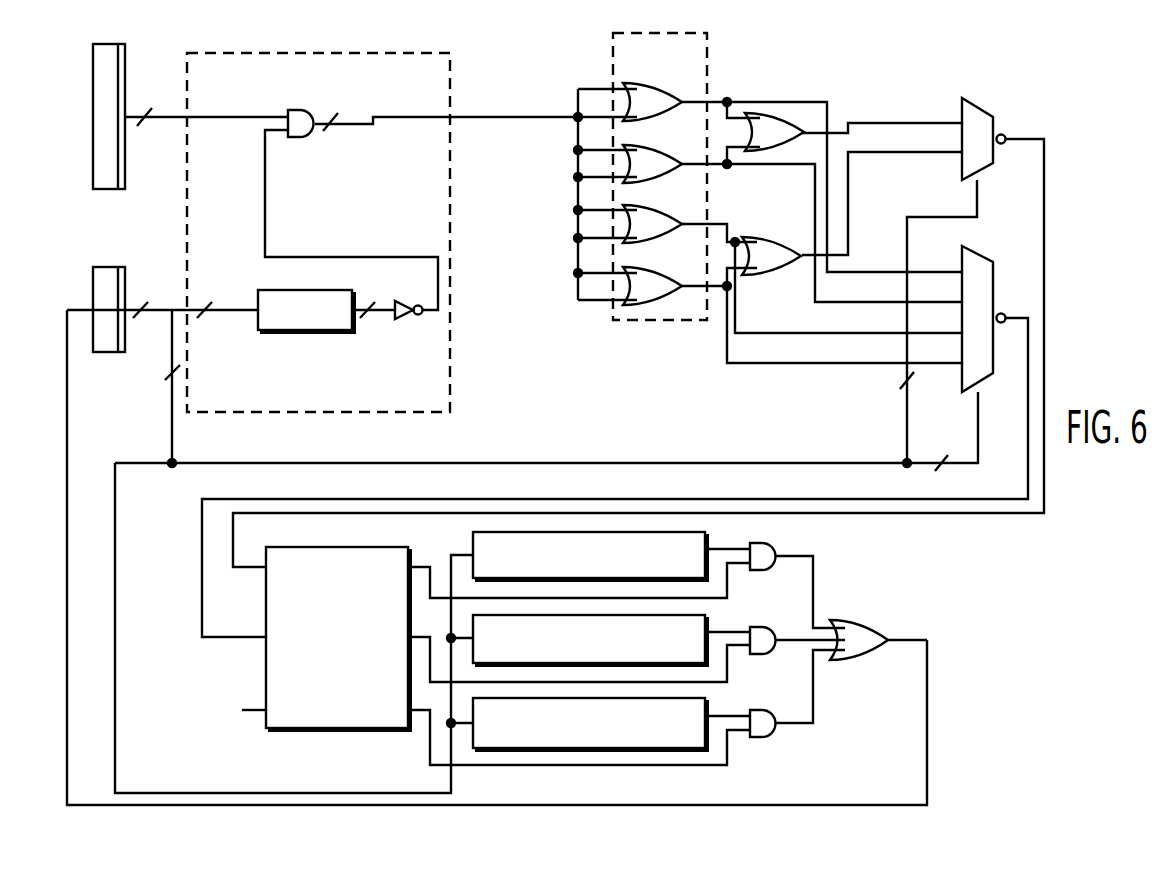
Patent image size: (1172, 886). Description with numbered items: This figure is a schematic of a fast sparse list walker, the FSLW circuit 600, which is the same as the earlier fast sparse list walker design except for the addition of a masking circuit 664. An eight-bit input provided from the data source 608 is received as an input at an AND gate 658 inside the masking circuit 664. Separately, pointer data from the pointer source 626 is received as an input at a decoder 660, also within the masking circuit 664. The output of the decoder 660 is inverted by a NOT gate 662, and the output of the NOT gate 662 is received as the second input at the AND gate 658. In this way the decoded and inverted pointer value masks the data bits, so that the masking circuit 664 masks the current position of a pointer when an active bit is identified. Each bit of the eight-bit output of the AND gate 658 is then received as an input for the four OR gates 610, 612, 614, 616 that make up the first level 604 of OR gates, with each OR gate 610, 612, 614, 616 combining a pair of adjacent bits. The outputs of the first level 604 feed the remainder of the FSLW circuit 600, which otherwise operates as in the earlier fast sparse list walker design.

The FSLW circuit 600 is at (533, 60).
The first level of OR gates 604 is at (660, 320).
The data source 608 is at (105, 189).
The OR gate 610 is at (638, 82).
The OR gate 612 is at (638, 145).
The OR gate 614 is at (638, 205).
The OR gate 616 is at (638, 267).
The pointer source 626 is at (105, 352).
The AND gate 658 is at (297, 111).
The decoder 660 is at (305, 332).
The NOT gate 662 is at (405, 320).
The masking circuit 664 is at (450, 230).